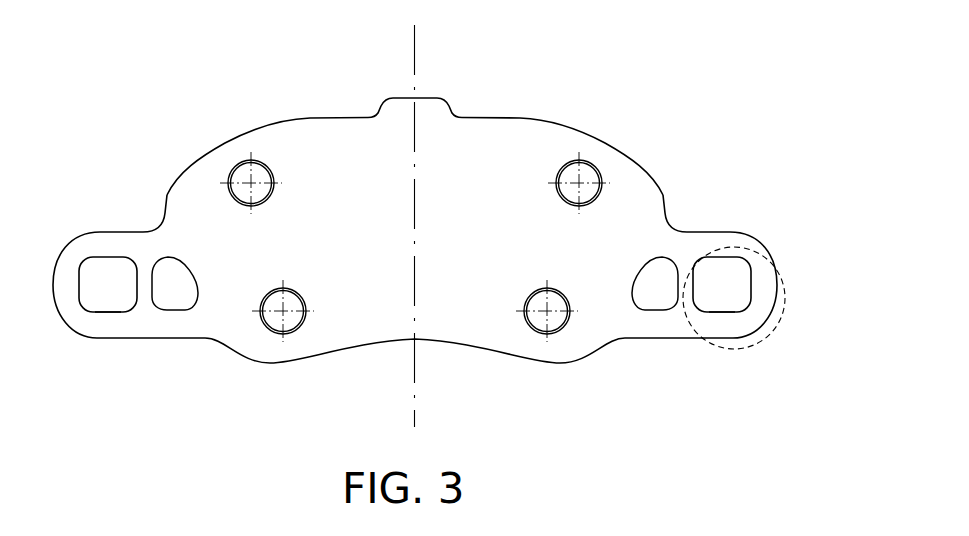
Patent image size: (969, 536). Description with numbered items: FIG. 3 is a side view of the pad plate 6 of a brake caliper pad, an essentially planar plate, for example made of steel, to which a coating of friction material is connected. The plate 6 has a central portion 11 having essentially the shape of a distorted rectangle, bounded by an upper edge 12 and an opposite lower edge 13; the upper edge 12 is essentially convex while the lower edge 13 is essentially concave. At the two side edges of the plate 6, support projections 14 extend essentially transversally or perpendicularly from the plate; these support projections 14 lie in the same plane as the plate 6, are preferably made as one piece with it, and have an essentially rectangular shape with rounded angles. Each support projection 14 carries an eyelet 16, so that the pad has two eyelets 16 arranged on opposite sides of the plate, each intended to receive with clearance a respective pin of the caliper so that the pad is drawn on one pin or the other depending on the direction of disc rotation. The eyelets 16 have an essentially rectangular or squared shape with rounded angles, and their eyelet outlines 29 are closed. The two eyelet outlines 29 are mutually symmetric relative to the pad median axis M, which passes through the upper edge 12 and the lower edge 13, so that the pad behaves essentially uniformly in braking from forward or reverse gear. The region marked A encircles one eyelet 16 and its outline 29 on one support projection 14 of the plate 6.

The plate 6 is at (532, 172).
The central portion 11 is at (483, 163).
The upper edge 12 is at (310, 118).
The lower edge 13 is at (382, 340).
The support projections 14 is at (75, 322).
The eyelets 16 is at (114, 282).
The eyelet outlines 29 is at (115, 313).
The pad median axis M is at (417, 62).
The detail region A is at (782, 327).